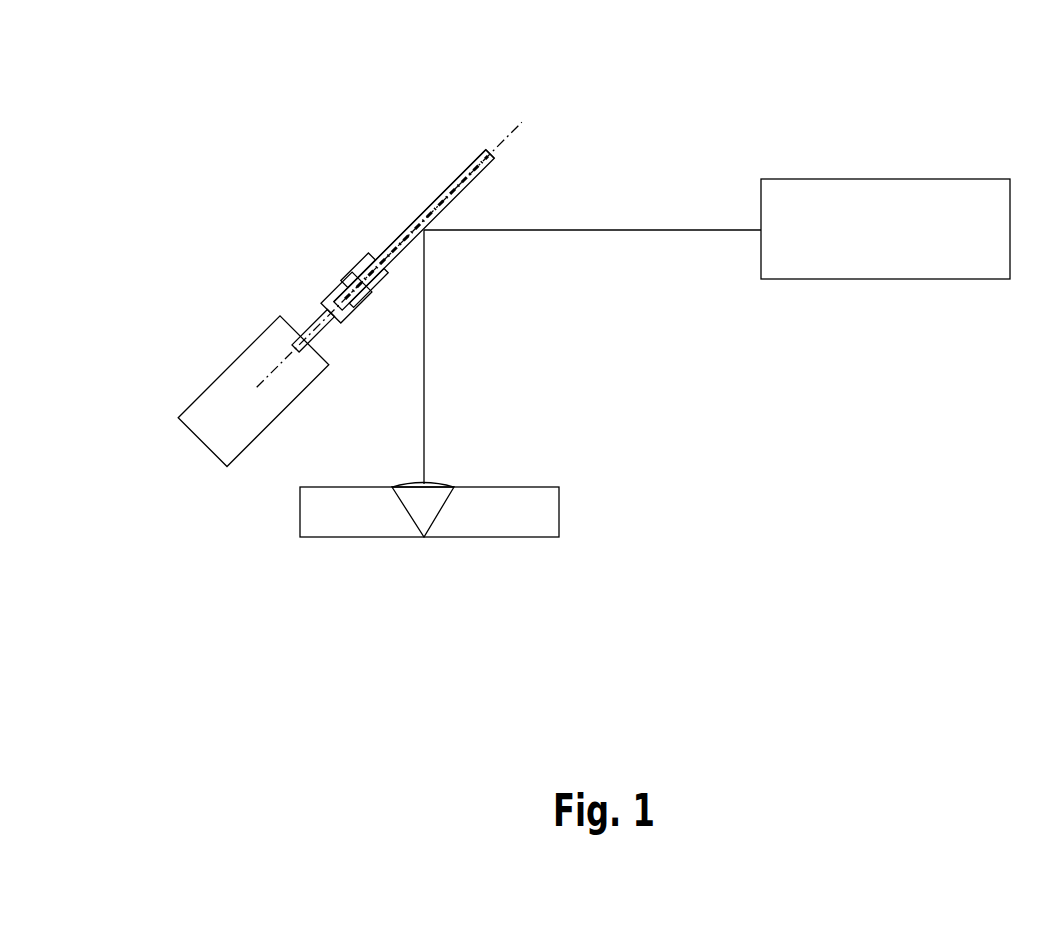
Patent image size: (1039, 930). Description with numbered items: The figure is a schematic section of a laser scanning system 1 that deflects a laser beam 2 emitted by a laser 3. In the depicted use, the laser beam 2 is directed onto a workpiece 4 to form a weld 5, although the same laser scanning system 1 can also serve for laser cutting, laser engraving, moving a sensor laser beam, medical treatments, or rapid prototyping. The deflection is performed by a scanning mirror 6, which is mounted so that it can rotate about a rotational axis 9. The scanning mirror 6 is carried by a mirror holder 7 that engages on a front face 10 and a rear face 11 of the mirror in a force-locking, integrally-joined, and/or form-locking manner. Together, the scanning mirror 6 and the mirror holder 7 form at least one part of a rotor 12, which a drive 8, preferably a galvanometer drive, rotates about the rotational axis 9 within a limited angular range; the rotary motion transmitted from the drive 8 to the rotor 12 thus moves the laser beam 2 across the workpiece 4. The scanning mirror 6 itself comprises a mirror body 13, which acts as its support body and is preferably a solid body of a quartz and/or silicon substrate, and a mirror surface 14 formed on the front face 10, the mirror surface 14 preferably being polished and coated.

The laser scanning system 1 is at (256, 96).
The laser beam 2 is at (424, 349).
The laser 3 is at (906, 212).
The workpiece 4 is at (543, 515).
The weld 5 is at (437, 489).
The scanning mirror 6 is at (454, 158).
The mirror holder 7 is at (333, 295).
The drive 8 is at (232, 395).
The rotational axis 9 is at (520, 118).
The front face 10 is at (486, 176).
The rear face 11 is at (415, 212).
The rotor 12 is at (368, 257).
The mirror body 13 is at (400, 233).
The mirror surface 14 is at (452, 208).